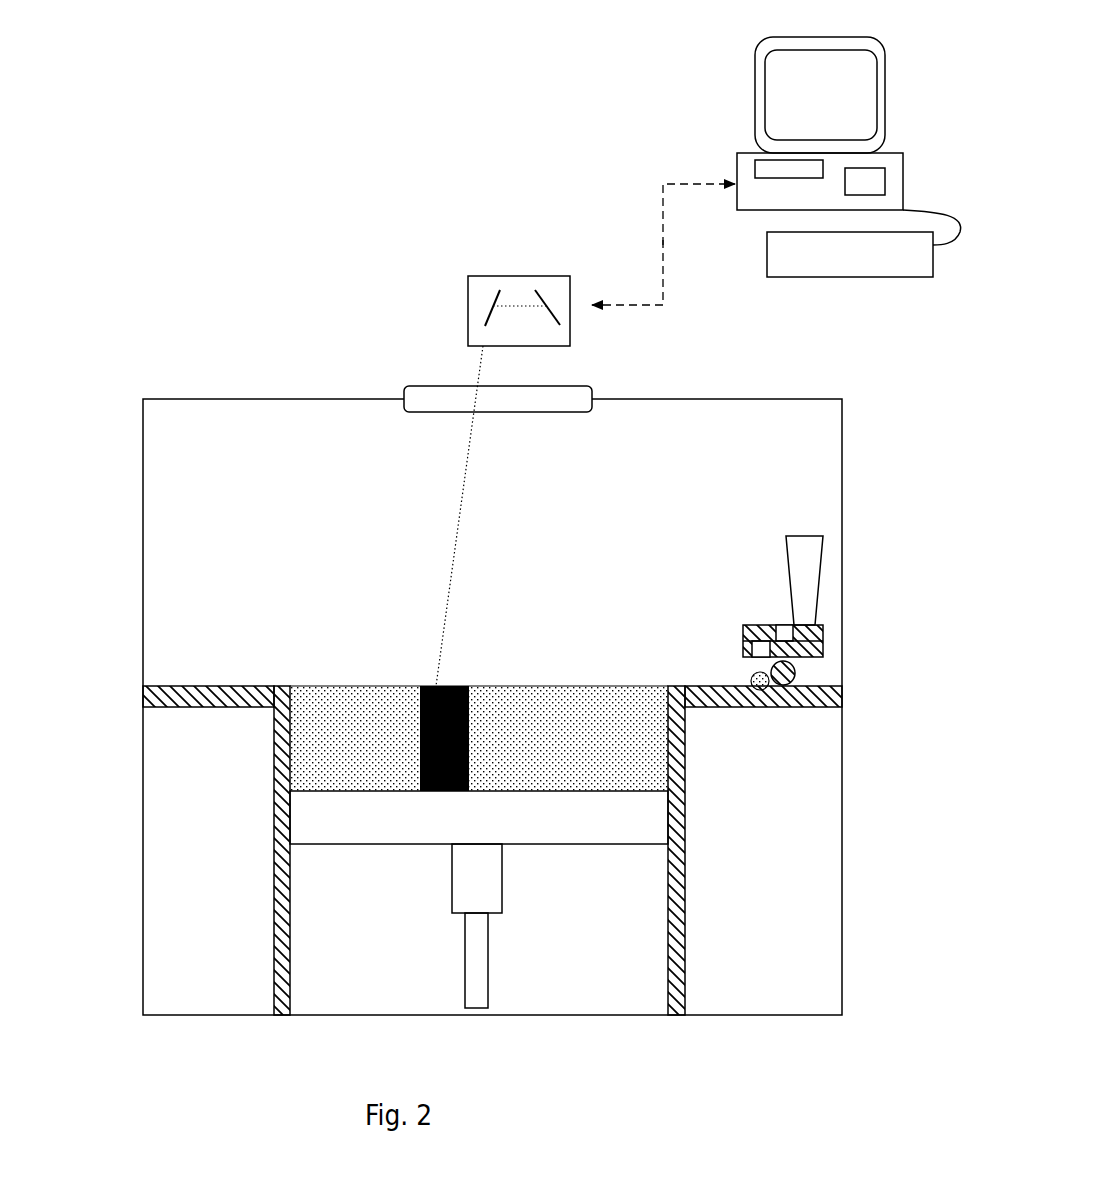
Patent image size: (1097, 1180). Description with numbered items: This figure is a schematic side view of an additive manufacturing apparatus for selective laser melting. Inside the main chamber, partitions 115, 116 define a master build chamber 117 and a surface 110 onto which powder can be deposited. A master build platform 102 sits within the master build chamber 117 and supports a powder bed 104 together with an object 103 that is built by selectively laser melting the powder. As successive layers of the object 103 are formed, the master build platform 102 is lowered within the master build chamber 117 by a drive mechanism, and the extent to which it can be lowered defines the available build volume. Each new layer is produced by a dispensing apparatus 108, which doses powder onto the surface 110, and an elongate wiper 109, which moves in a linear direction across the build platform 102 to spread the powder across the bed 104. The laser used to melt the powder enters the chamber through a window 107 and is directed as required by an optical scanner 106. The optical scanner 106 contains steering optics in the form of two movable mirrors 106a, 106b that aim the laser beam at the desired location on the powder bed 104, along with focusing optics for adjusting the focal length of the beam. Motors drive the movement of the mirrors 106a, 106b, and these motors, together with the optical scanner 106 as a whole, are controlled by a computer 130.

The master build platform 102 is at (537, 808).
The object 103 is at (431, 795).
The powder bed 104 is at (340, 762).
The optical scanner 106 is at (440, 435).
The movable mirror 106a is at (492, 288).
The movable mirror 106b is at (548, 288).
The window 107 is at (398, 383).
The dispensing apparatus 108 is at (824, 623).
The elongate wiper 109 is at (800, 668).
The surface 110 is at (842, 694).
The partition 115 is at (172, 685).
The partition 116 is at (690, 874).
The master build chamber 117 is at (666, 706).
The computer 130 is at (718, 62).